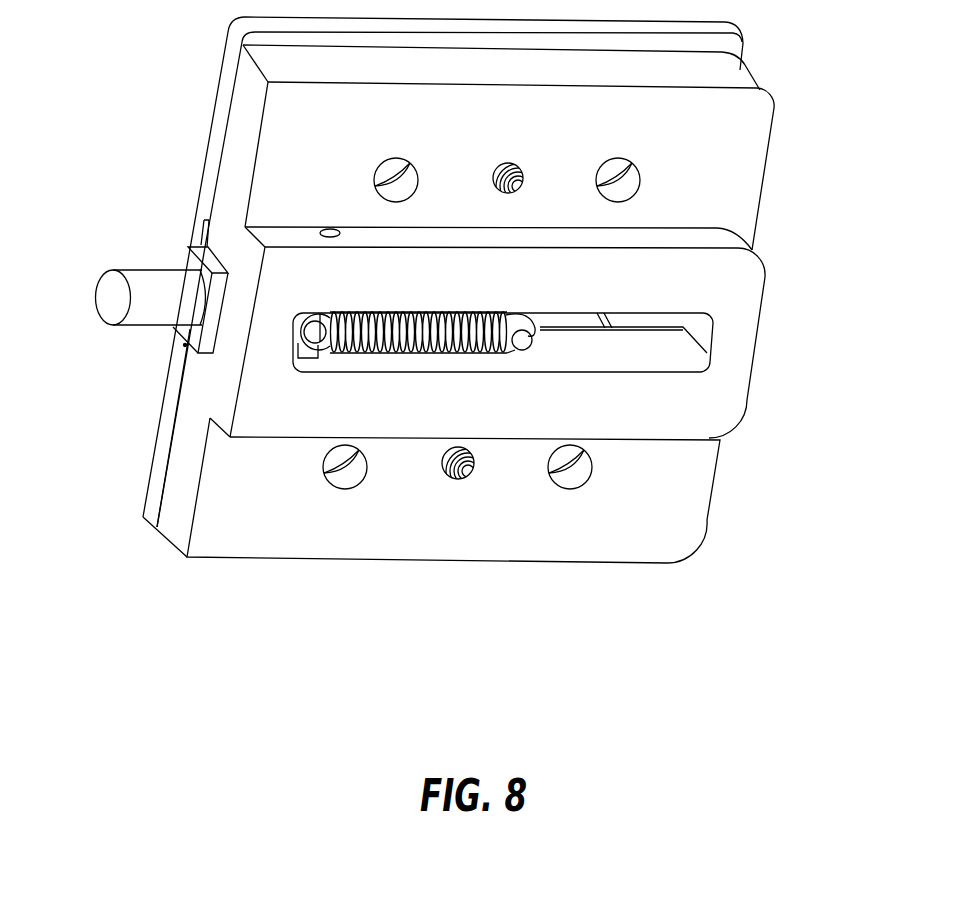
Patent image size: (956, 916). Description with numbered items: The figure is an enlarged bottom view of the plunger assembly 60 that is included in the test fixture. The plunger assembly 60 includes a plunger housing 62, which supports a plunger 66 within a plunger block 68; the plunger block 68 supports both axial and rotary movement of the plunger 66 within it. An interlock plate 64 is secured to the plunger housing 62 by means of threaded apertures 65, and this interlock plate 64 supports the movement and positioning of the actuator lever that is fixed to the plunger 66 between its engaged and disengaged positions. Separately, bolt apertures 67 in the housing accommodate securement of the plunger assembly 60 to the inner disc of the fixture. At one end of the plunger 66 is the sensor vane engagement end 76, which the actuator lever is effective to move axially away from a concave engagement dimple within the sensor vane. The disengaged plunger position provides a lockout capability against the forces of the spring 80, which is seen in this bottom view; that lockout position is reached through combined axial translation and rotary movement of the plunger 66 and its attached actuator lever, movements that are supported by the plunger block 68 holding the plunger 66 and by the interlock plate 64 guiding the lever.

The plunger assembly 60 is at (240, 146).
The plunger housing 62 is at (748, 183).
The interlock plate 64 is at (730, 49).
The threaded apertures 65 is at (522, 177).
The plunger 66 is at (147, 318).
The bolt apertures 67 is at (412, 173).
The plunger block 68 is at (213, 331).
The sensor vane engagement end 76 is at (107, 300).
The spring 80 is at (396, 324).